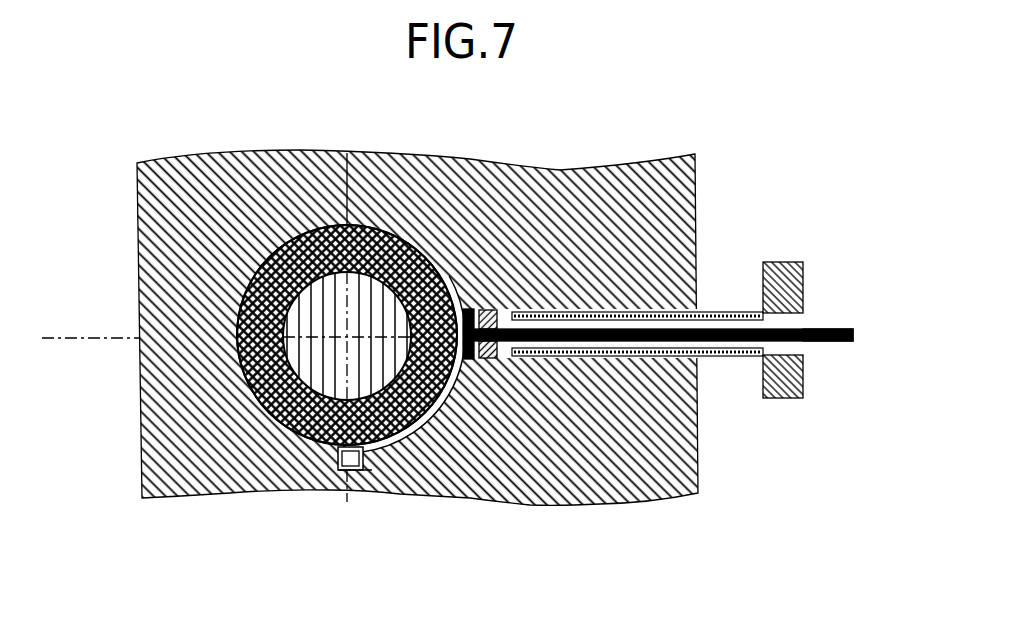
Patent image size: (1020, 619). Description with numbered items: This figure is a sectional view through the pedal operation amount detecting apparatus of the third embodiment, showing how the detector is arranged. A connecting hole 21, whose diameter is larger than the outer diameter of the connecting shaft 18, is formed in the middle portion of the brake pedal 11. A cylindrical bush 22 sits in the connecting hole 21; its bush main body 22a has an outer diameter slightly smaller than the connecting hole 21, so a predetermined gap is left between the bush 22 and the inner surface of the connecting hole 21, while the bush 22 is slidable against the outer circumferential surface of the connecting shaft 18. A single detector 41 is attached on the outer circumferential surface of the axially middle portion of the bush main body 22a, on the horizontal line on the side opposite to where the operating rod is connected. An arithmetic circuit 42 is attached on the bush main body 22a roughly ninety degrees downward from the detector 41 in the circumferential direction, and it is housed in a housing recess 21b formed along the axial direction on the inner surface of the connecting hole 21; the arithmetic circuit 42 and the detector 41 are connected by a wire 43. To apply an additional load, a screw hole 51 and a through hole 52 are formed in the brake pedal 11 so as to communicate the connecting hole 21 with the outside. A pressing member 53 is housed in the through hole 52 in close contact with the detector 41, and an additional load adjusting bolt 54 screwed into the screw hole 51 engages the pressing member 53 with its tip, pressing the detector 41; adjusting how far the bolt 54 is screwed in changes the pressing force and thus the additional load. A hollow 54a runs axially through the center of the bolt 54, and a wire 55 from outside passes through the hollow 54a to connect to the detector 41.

The brake pedal 11 is at (600, 215).
The connecting shaft 18 is at (312, 358).
The connecting hole 21 is at (298, 438).
The housing recess 21b is at (343, 472).
The bush 22 is at (347, 268).
The bush main body 22a is at (312, 250).
The detector 41 is at (464, 309).
The arithmetic circuit 42 is at (364, 463).
The wire 43 is at (448, 383).
The screw hole 51 is at (641, 349).
The through hole 52 is at (493, 354).
The pressing member 53 is at (497, 314).
The additional load adjusting bolt 54 is at (780, 276).
The hollow 54a is at (722, 347).
The wire 55 is at (824, 341).